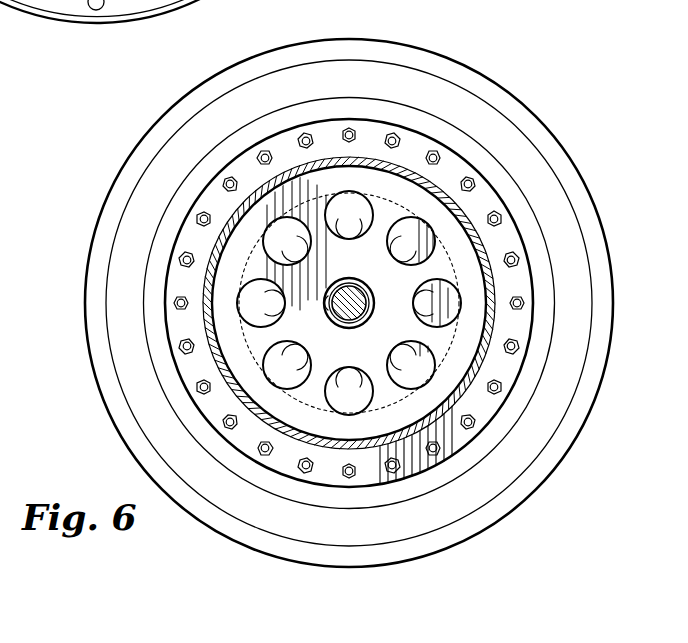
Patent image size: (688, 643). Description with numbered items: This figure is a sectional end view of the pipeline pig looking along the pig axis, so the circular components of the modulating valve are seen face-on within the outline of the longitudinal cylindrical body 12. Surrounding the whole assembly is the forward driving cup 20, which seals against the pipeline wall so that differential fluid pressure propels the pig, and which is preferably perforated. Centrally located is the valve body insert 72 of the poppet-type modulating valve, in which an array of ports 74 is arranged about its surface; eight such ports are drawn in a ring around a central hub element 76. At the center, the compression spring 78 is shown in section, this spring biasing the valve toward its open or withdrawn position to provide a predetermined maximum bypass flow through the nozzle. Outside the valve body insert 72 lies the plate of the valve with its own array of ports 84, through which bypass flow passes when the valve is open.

The driving cup 20 is at (485, 70).
The cylindrical body 12 is at (469, 390).
The valve body insert 72 is at (465, 230).
The array of ports 74 is at (298, 379).
The hub 76 is at (342, 320).
The compression spring 78 is at (337, 282).
The array of ports 84 is at (402, 357).